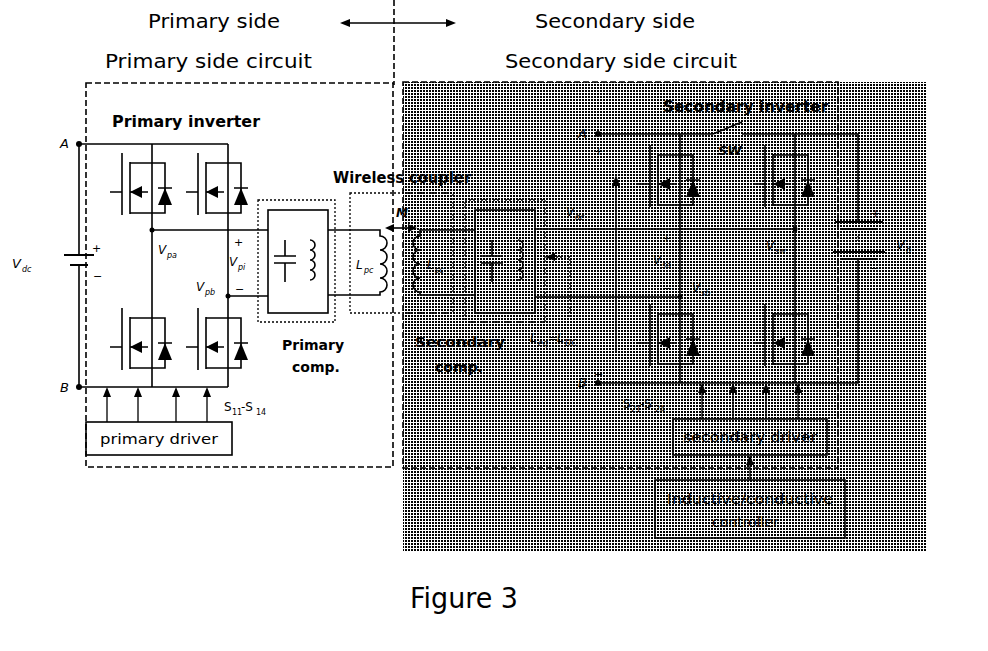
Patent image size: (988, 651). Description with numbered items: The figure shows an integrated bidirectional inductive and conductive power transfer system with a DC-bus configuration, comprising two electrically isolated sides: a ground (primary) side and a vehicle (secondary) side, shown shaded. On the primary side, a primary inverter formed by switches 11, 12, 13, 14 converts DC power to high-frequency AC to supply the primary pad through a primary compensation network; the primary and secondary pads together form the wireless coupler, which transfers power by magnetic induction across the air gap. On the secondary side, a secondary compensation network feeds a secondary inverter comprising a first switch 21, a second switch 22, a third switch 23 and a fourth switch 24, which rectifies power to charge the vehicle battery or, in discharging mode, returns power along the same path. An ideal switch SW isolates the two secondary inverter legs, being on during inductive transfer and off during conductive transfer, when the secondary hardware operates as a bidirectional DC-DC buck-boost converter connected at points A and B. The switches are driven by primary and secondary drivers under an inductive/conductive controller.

The primary inverter switch S11 11 is at (133, 184).
The primary inverter switch S12 12 is at (132, 340).
The primary inverter switch S13 13 is at (225, 184).
The primary inverter switch S14 14 is at (229, 339).
The first switch 21 is at (660, 176).
The second switch 22 is at (659, 338).
The third switch 23 is at (792, 176).
The fourth switch 24 is at (796, 335).